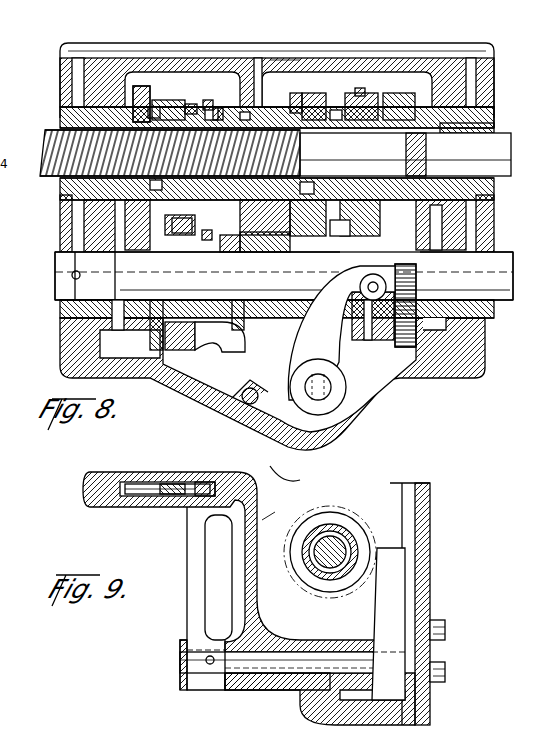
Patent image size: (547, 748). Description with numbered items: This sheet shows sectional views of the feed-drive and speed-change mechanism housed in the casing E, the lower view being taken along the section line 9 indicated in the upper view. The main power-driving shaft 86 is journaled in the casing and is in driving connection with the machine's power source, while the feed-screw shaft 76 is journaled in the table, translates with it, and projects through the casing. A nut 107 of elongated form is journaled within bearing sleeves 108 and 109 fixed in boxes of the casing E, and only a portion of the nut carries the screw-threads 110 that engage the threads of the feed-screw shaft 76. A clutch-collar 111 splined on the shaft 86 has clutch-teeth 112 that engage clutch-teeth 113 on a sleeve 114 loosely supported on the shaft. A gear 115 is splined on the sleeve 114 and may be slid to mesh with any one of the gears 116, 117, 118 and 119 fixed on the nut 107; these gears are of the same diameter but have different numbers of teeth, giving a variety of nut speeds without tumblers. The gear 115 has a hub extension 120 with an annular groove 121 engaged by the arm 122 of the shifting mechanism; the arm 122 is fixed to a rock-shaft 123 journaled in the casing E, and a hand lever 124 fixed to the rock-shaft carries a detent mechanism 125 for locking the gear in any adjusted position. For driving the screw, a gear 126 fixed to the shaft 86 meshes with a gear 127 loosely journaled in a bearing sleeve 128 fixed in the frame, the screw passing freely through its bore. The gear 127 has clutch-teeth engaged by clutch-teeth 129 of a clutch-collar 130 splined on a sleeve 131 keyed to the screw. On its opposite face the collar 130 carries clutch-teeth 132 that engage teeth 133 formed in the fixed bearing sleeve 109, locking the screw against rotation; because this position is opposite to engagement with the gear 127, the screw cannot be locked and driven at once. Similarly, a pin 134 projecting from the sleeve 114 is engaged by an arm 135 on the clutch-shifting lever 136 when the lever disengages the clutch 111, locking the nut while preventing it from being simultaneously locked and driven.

In FIG. 8, the gear 127 is at (146, 88).
In FIG. 8, the bearing sleeve 109 is at (285, 62).
In FIG. 8, the clutch-collar 130 is at (192, 104).
In FIG. 8, the clutch-teeth 129 is at (165, 106).
In FIG. 8, the clutch-teeth 132 is at (208, 100).
In FIG. 8, the sleeve 131 is at (222, 106).
In FIG. 8, the screw-threads 110 is at (293, 95).
In FIG. 8, the gear 119 is at (318, 96).
In FIG. 8, the gear 118 is at (352, 96).
In FIG. 8, the gear 117 is at (372, 96).
In FIG. 8, the gear 116 is at (400, 96).
In FIG. 9, the gear 116 is at (279, 464).
In FIG. 8, the bearing sleeve 108 is at (493, 116).
In FIG. 8, the nut 107 is at (493, 129).
In FIG. 8, the feed-screw shaft 76 is at (505, 150).
In FIG. 8, the bearing sleeve 128 is at (62, 192).
In FIG. 8, the teeth 133 is at (210, 200).
In FIG. 8, the gear 126 is at (212, 226).
In FIG. 8, the clutch-teeth 113 is at (232, 236).
In FIG. 8, the sleeve 114 is at (244, 238).
In FIG. 8, the gear 9 is at (352, 206).
In FIG. 9, the gear 9 is at (318, 448).
In FIG. 8, the gear 115 is at (441, 225).
In FIG. 9, the gear 115 is at (278, 512).
In FIG. 8, the main power-driving shaft 86 is at (496, 262).
In FIG. 9, the main power-driving shaft 86 is at (345, 540).
In FIG. 8, the casing E is at (486, 340).
In FIG. 9, the casing E is at (230, 545).
In FIG. 8, the clutch-teeth 112 is at (130, 326).
In FIG. 8, the clutch-collar 111 is at (156, 332).
In FIG. 8, the clutch-shifting lever 136 is at (190, 350).
In FIG. 8, the arm 135 is at (238, 346).
In FIG. 8, the pin 134 is at (246, 324).
In FIG. 8, the annular groove 121 is at (368, 335).
In FIG. 8, the hub extension 120 is at (383, 330).
In FIG. 9, the hub extension 120 is at (350, 525).
In FIG. 8, the arm 122 is at (303, 348).
In FIG. 9, the arm 122 is at (402, 626).
In FIG. 8, the rock-shaft 123 is at (325, 400).
In FIG. 9, the rock-shaft 123 is at (262, 690).
In FIG. 9, the detent mechanism 125 is at (205, 484).
In FIG. 9, the hand lever 124 is at (190, 608).